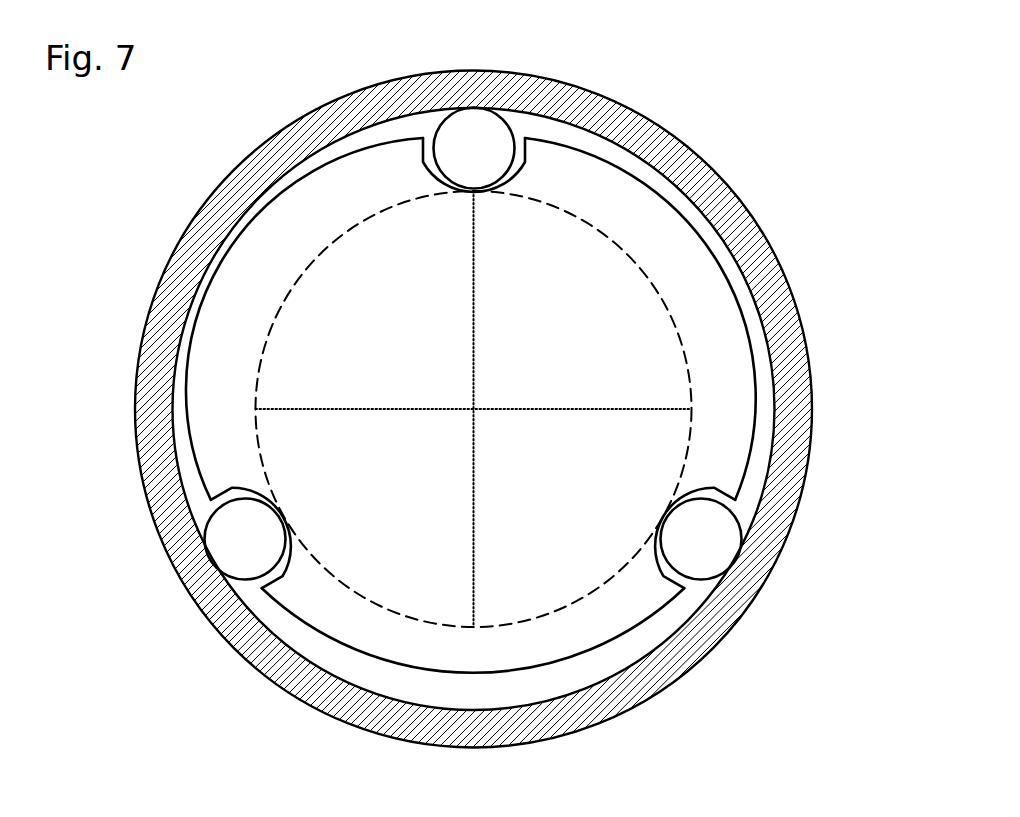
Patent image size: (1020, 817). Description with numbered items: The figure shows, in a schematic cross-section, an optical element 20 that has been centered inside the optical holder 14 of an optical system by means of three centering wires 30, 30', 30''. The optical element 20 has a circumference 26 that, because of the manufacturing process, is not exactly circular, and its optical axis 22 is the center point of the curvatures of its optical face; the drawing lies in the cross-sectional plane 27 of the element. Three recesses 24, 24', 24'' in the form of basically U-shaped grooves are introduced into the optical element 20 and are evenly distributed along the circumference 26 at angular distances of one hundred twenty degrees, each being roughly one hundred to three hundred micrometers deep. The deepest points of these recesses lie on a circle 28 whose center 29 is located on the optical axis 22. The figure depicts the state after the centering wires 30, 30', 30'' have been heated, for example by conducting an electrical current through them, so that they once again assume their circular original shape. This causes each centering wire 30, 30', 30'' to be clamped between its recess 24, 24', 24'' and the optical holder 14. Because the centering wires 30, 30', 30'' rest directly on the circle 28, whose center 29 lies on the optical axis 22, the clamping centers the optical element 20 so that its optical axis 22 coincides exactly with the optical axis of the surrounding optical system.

The optical holder 14 is at (153, 300).
The optical element 20 is at (322, 150).
The optical axis 22 is at (473, 412).
The recess 24 is at (549, 119).
The recess 24' is at (715, 591).
The recess 24'' is at (228, 589).
The circumference 26 is at (747, 482).
The cross-sectional plane 27 is at (593, 343).
The circle 28 is at (652, 280).
The center 29 is at (473, 410).
The centering wire 30 is at (440, 107).
The centering wire 30' is at (767, 572).
The centering wire 30'' is at (177, 528).